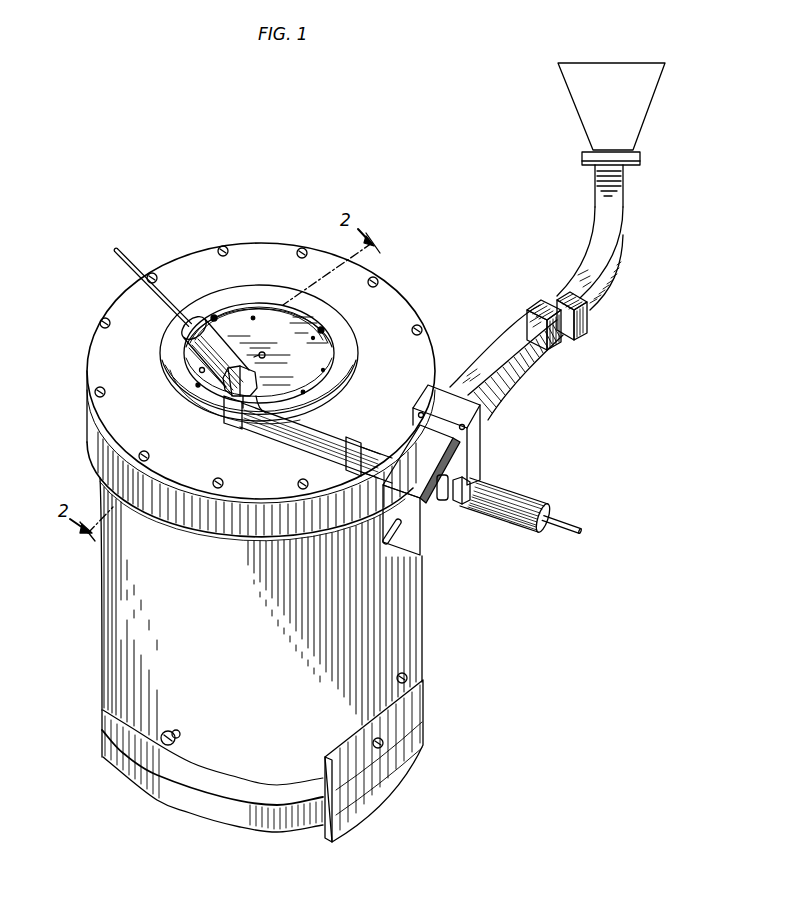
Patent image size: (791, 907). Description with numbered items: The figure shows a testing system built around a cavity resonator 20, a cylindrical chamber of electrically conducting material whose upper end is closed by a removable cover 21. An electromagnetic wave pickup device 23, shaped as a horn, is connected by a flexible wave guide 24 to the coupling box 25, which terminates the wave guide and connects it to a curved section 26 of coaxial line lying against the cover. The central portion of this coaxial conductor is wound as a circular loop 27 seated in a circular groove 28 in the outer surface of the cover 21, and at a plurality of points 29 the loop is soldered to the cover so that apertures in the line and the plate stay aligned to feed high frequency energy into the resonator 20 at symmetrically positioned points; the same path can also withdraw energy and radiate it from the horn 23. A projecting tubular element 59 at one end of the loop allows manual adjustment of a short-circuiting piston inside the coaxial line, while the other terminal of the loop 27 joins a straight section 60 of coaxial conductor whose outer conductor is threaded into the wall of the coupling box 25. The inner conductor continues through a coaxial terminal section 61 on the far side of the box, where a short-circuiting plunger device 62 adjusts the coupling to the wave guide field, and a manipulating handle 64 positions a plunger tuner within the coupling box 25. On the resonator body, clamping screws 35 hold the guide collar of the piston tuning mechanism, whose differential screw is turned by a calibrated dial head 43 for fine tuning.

The cavity resonator 20 is at (400, 637).
The removable cover 21 is at (396, 303).
The electromagnetic wave pickup device 23 is at (648, 93).
The flexible wave guide 24 is at (606, 308).
The coupling box 25 is at (431, 470).
The curved section of coaxial line 26 is at (182, 388).
The circular loop 27 is at (348, 346).
The circular groove 28 is at (280, 307).
The soldering points 29 is at (324, 330).
The clamping screws 35 is at (170, 729).
The calibrated dial head 43 is at (208, 835).
The projecting tubular element 59 is at (122, 262).
The straight section of coaxial conductor 60 is at (333, 440).
The coaxial terminal section 61 is at (514, 500).
The short-circuiting plunger device 62 is at (568, 524).
The manipulating handle 64 is at (395, 539).